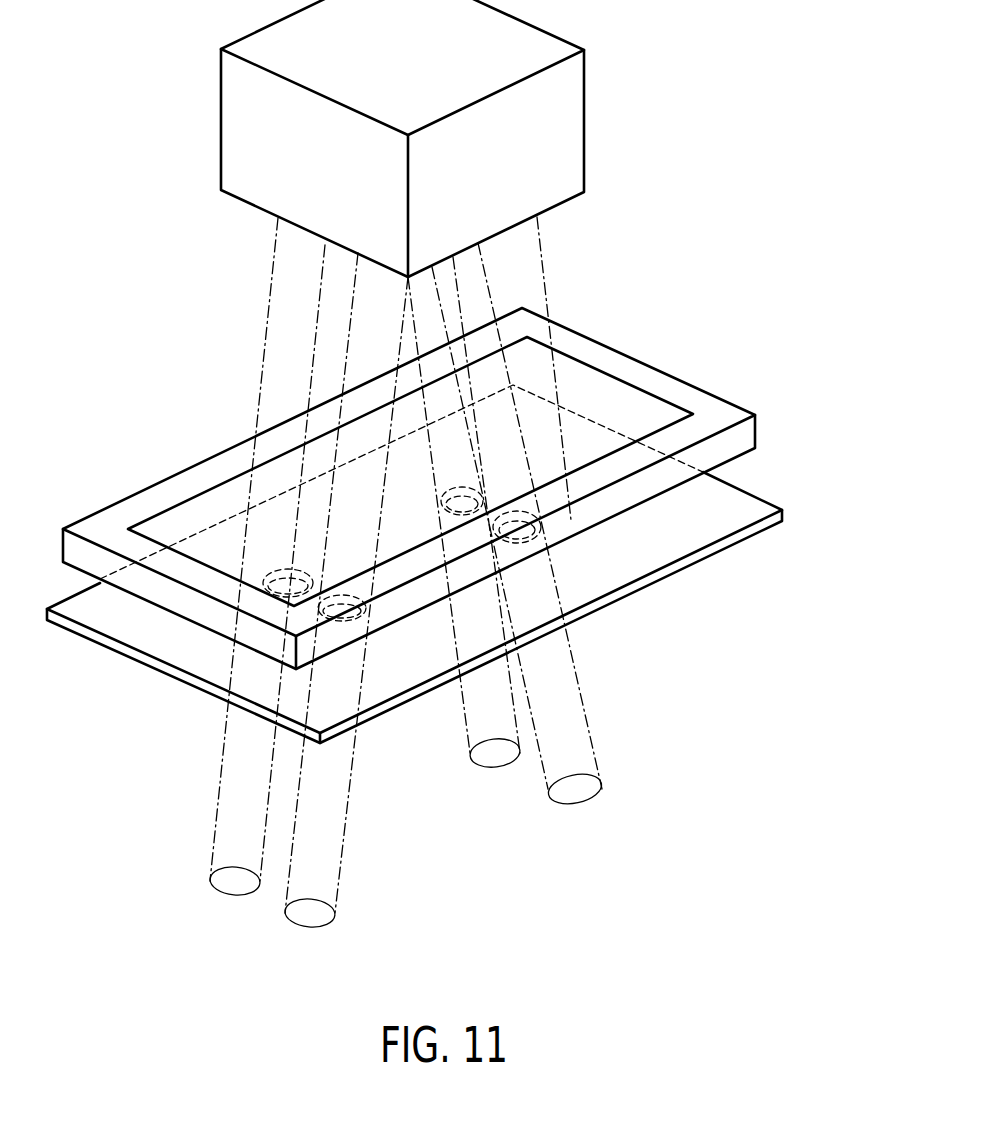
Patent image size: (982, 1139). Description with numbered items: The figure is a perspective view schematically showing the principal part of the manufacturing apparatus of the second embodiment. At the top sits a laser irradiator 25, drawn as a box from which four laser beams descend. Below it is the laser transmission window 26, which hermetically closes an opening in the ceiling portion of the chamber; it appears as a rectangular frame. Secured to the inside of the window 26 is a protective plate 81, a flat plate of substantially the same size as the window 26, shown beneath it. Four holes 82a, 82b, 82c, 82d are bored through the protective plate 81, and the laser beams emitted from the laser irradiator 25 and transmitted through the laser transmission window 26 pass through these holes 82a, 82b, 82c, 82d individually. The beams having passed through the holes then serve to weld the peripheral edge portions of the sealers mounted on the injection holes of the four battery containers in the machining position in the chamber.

The laser irradiator 25 is at (585, 117).
The laser transmission window 26 is at (657, 365).
The protective plate 81 is at (757, 490).
The hole 82a is at (268, 592).
The hole 82b is at (368, 624).
The hole 82c is at (483, 490).
The hole 82d is at (538, 535).